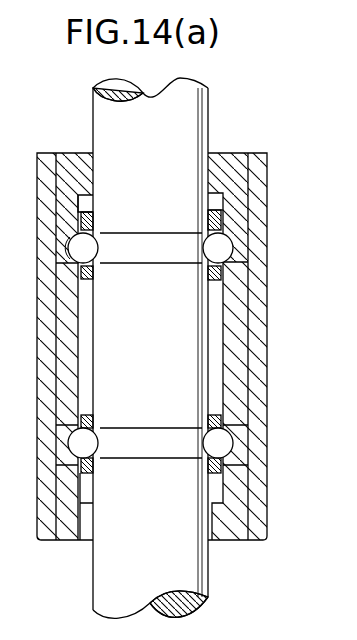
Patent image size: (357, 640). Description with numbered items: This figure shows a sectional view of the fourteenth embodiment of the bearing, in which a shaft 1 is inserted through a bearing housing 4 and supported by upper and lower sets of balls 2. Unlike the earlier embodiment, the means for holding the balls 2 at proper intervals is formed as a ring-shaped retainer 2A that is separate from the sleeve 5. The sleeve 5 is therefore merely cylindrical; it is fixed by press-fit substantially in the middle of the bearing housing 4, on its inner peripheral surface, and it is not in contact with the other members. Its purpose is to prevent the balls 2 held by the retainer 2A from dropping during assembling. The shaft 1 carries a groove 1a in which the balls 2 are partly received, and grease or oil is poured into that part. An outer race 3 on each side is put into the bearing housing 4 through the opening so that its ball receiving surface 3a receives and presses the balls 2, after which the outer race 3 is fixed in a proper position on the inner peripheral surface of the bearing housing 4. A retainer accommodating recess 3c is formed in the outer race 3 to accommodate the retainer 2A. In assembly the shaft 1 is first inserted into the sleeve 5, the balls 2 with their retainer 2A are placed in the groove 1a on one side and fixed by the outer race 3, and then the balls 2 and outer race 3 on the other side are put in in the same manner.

The shaft 1 is at (97, 112).
The groove 1a is at (100, 249).
The balls 2 is at (92, 266).
The retainer 2A is at (207, 219).
The outer race 3 is at (231, 157).
The ball receiving surface 3a is at (67, 258).
The retainer accommodating recess 3c is at (80, 199).
The bearing housing 4 is at (258, 317).
The sleeve 5 is at (243, 395).